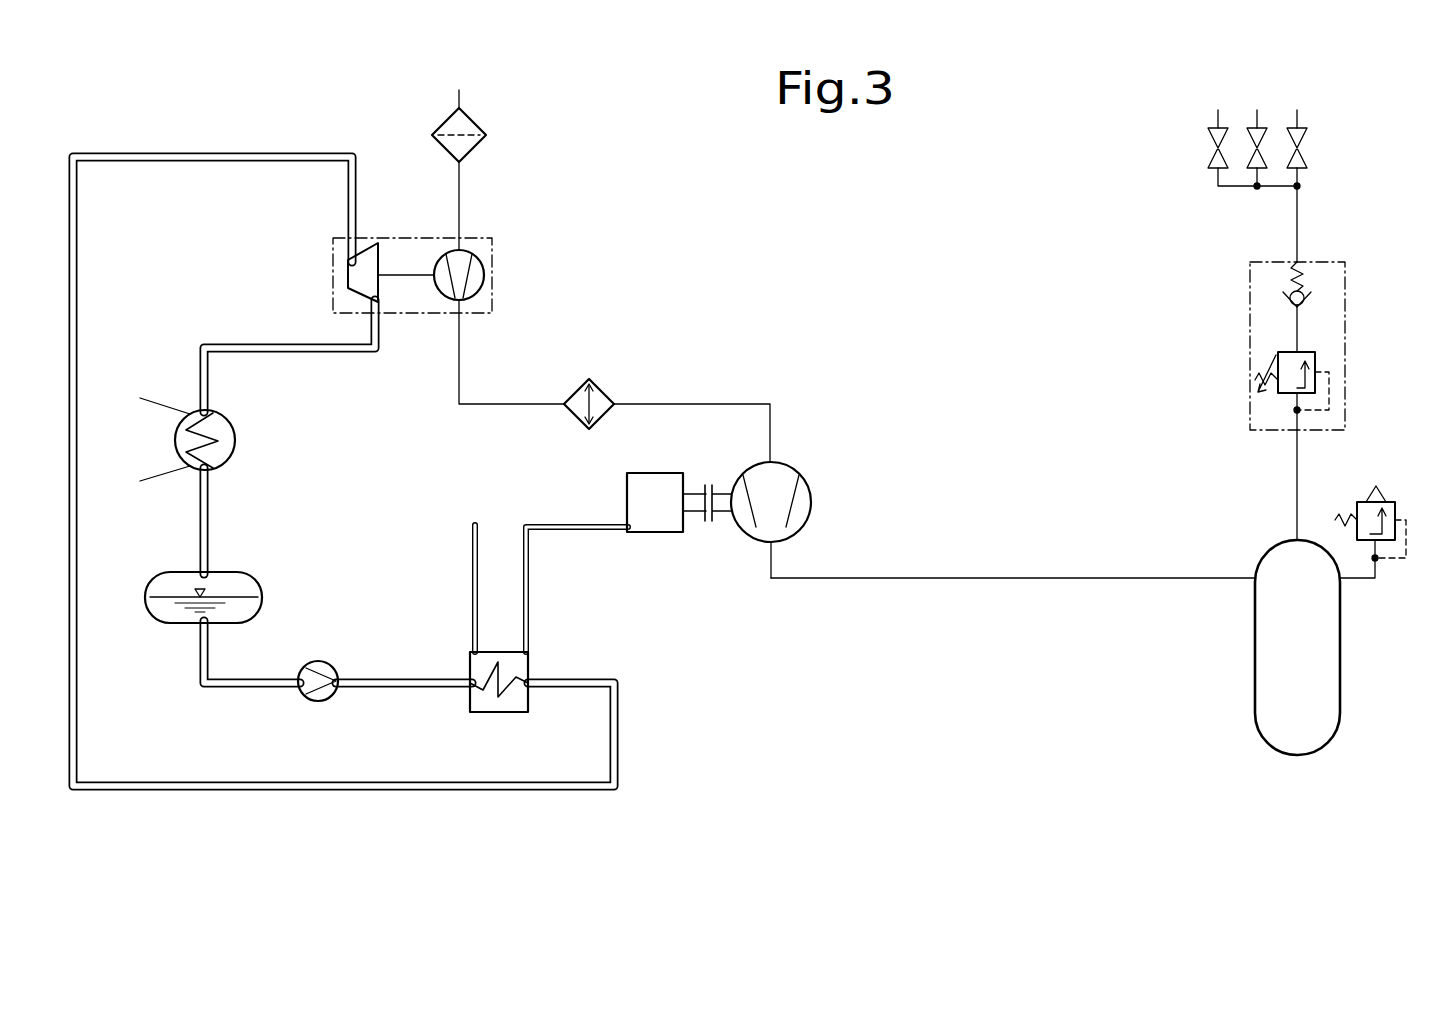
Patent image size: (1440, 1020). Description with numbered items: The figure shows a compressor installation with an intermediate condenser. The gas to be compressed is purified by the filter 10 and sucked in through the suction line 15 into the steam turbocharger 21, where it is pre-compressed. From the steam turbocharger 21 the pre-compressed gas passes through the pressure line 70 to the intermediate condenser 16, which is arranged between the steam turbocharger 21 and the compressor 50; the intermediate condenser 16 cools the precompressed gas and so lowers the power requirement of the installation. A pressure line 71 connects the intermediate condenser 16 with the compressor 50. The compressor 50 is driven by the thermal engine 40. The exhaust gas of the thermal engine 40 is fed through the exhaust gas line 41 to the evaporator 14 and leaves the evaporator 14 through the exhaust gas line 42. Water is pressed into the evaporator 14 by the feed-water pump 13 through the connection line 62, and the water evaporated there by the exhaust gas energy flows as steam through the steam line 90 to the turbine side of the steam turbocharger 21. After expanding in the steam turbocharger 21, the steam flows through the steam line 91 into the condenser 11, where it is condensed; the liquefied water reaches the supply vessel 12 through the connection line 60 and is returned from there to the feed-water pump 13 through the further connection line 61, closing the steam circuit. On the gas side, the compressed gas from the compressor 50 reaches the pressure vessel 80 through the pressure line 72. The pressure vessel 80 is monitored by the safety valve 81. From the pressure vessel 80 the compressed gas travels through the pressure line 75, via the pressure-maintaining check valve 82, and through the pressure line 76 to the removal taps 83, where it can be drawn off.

The filter 10 is at (500, 114).
The suction line 15 is at (460, 206).
The steam turbocharger 21 is at (491, 286).
The steam line 91 is at (284, 346).
The condenser 11 is at (175, 441).
The connection line 60 is at (200, 500).
The supply vessel 12 is at (150, 576).
The connection line 61 is at (272, 690).
The feed-water pump 13 is at (328, 700).
The connection line 62 is at (440, 690).
The evaporator 14 is at (522, 712).
The exhaust gas line 41 is at (531, 590).
The exhaust gas line 42 is at (468, 592).
The thermal engine 40 is at (676, 472).
The compressor 50 is at (796, 476).
The pressure line 70 is at (473, 404).
The intermediate condenser 16 is at (612, 388).
The pressure line 71 is at (712, 404).
The pressure line 72 is at (846, 580).
The pressure line 75 is at (1300, 512).
The pressure line 76 is at (1300, 258).
The pressure vessel 80 is at (1338, 660).
The safety valve 81 is at (1388, 508).
The pressure-maintaining check valve 82 is at (1346, 312).
The removal taps 83 is at (1328, 124).
The steam line 90 is at (166, 793).